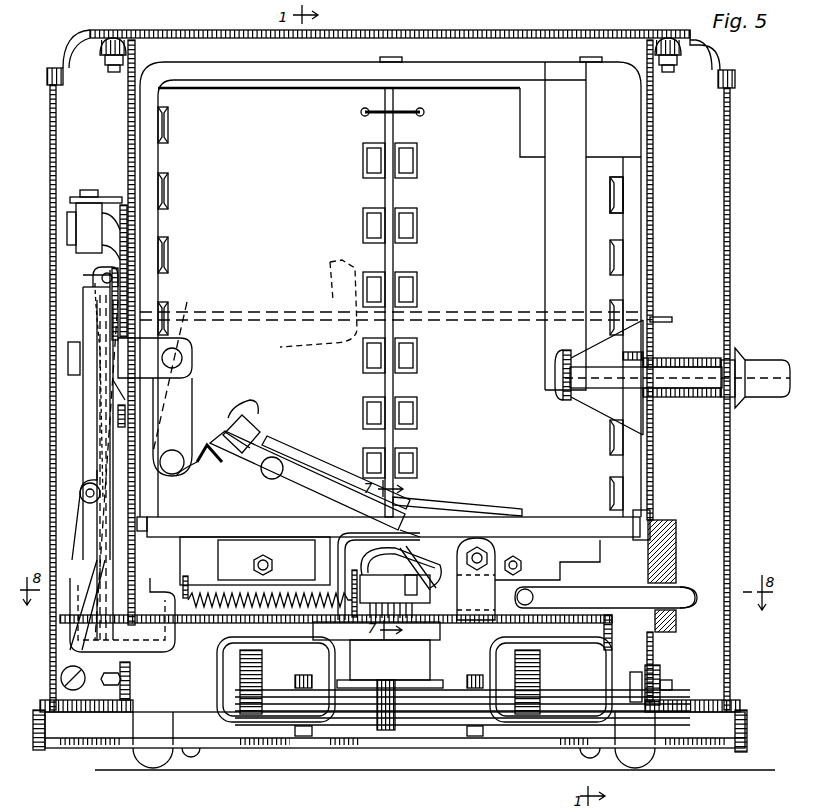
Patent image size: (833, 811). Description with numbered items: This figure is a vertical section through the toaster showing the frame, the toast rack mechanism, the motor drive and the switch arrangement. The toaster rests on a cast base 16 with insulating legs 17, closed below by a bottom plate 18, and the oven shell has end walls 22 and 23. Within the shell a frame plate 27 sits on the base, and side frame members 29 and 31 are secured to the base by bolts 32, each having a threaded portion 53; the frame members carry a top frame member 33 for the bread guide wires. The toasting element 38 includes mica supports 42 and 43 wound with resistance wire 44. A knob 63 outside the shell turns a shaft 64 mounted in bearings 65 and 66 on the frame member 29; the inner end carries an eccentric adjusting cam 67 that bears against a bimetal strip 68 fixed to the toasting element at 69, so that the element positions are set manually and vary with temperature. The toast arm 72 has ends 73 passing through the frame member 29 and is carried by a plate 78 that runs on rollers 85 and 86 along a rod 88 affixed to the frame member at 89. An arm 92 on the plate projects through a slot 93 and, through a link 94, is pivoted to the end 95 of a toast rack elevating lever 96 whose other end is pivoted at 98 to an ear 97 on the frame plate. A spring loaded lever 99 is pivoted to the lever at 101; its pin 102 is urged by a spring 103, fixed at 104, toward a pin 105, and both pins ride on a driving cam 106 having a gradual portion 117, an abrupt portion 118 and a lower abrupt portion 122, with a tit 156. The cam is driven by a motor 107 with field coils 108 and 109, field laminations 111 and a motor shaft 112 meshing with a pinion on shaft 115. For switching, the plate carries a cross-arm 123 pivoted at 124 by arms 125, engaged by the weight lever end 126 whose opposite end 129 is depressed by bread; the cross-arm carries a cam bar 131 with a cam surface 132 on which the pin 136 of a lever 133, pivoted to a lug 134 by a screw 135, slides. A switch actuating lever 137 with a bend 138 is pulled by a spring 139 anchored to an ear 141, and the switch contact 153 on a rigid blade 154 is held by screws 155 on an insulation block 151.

The base 16 is at (340, 566).
The legs 17 is at (394, 758).
The bottom plate 18 is at (683, 748).
The end wall 22 is at (730, 215).
The end wall 23 is at (50, 225).
The frame plate 27 is at (574, 624).
The side frame member 29 is at (654, 128).
The side frame member 31 is at (128, 118).
The bolts 32 is at (640, 712).
The top frame member 33 is at (515, 32).
The toasting element 38 is at (637, 215).
The mica support 42 is at (557, 319).
The mica support 43 is at (390, 289).
The resistance wire 44 is at (418, 212).
The threaded portion 53 is at (672, 682).
The knob 63 is at (760, 380).
The shaft 64 is at (676, 362).
The bearing 65 is at (680, 398).
The bearing 66 is at (572, 400).
The adjusting cam 67 is at (563, 400).
The strip 68 is at (549, 228).
The fixing point of strip 69 is at (532, 226).
The toast arm 72 is at (262, 310).
The ends of toast arms 73 is at (668, 318).
The plate 78 is at (127, 250).
The roller 85 is at (70, 230).
The roller 86 is at (68, 364).
The rod 88 is at (85, 444).
The rod attachment 89 is at (112, 197).
The arm 92 is at (192, 360).
The slot 93 is at (128, 570).
The link 94 is at (205, 393).
The end of lever 95 is at (200, 466).
The toast rack elevating lever 96 is at (264, 418).
The ear 97 is at (476, 579).
The pivot 98 is at (484, 548).
The spring loaded lever 99 is at (308, 470).
The pivot 101 is at (265, 477).
The pin 102 is at (440, 536).
The spring 103 is at (285, 447).
The spring attachment 104 is at (262, 432).
The pin 105 is at (397, 559).
The driving cam 106 is at (415, 592).
The motor 107 is at (477, 760).
The field coil 108 is at (560, 692).
The field coil 109 is at (228, 676).
The field laminations 111 is at (425, 712).
The motor shaft 112 is at (352, 632).
The shaft 115 is at (410, 548).
The gradually sloping portion 117 is at (395, 589).
The abrupt slope portion 118 is at (412, 560).
The abruptly sloping portion 122 is at (420, 581).
The cross-arm 123 is at (115, 447).
The pivotal support 124 is at (83, 275).
The arms 125 is at (110, 330).
The end of weight actuated lever 126 is at (128, 412).
The end of weight actuated lever 129 is at (333, 265).
The cam bar 131 is at (90, 303).
The cam surface 132 is at (88, 405).
The lever 133 is at (68, 650).
The lug 134 is at (62, 698).
The screw 135 is at (66, 674).
The pin 136 is at (80, 495).
The switch actuating lever 137 is at (122, 615).
The right angled bend 138 is at (192, 597).
The spring 139 is at (222, 623).
The ear 141 is at (352, 586).
The block of insulation 151 is at (666, 524).
The contact 153 is at (533, 598).
The rigid blade 154 is at (605, 597).
The screws 155 is at (688, 590).
The tit 156 is at (418, 628).